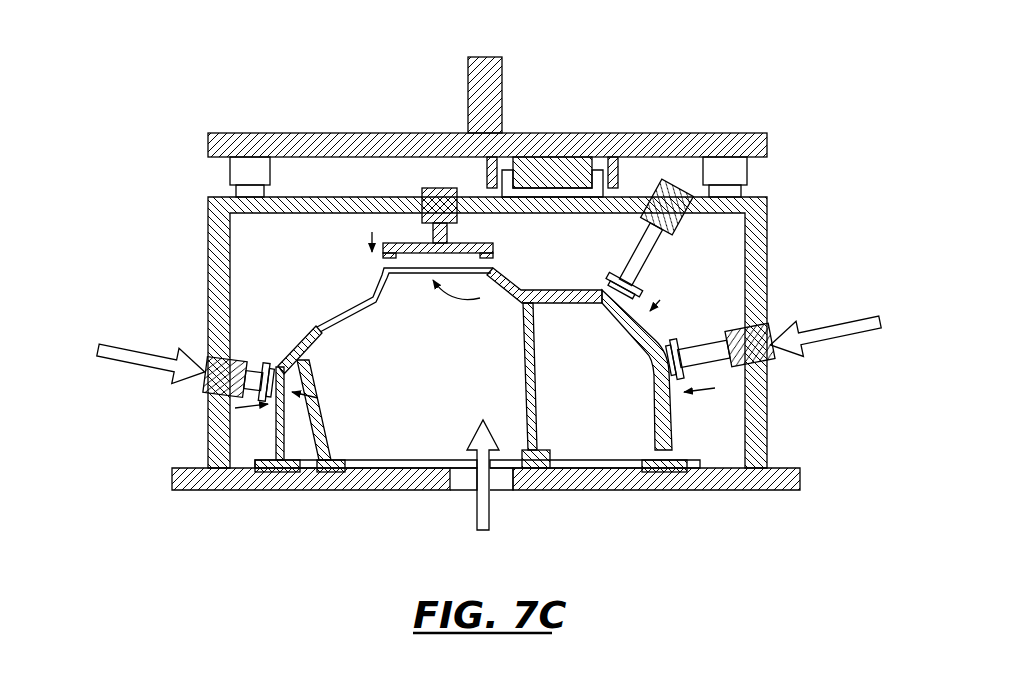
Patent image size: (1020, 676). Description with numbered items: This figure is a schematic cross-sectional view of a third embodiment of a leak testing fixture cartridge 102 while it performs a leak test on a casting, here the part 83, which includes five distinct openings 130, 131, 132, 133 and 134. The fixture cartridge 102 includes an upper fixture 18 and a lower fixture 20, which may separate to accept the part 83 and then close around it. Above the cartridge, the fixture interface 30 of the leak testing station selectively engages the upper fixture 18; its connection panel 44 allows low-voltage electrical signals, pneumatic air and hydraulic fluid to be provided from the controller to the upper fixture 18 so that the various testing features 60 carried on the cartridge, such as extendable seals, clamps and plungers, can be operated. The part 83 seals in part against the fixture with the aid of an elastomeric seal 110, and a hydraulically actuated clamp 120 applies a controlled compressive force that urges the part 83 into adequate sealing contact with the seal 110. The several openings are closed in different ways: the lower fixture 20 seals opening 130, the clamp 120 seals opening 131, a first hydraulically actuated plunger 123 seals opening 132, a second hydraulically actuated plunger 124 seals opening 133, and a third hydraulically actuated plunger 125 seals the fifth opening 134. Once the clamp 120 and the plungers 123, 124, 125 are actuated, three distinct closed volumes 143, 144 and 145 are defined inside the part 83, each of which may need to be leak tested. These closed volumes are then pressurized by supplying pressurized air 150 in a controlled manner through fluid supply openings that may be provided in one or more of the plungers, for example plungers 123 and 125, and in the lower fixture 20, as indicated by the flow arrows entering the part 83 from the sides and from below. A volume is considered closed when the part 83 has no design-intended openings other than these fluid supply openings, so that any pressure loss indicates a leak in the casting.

The fixture cartridge 102 is at (128, 238).
The fixture interface 30 is at (208, 140).
The connection panel 44 is at (633, 172).
The upper fixture 18 is at (208, 212).
The lower fixture 20 is at (172, 478).
The testing features 60 is at (428, 188).
The hydraulically actuated clamp 120 is at (495, 250).
The opening 131 is at (500, 274).
The opening 132 is at (318, 405).
The opening 133 is at (598, 312).
The opening 134 is at (637, 382).
The first hydraulically actuated plunger 123 is at (264, 365).
The second hydraulically actuated plunger 124 is at (642, 290).
The third hydraulically actuated plunger 125 is at (730, 370).
The volume 144 is at (448, 385).
The volume 145 is at (612, 415).
The volume 143 is at (305, 440).
The part 83 is at (665, 440).
The elastomeric seal 110 is at (268, 466).
The opening 130 is at (440, 440).
The pressurized air 150 is at (100, 350).